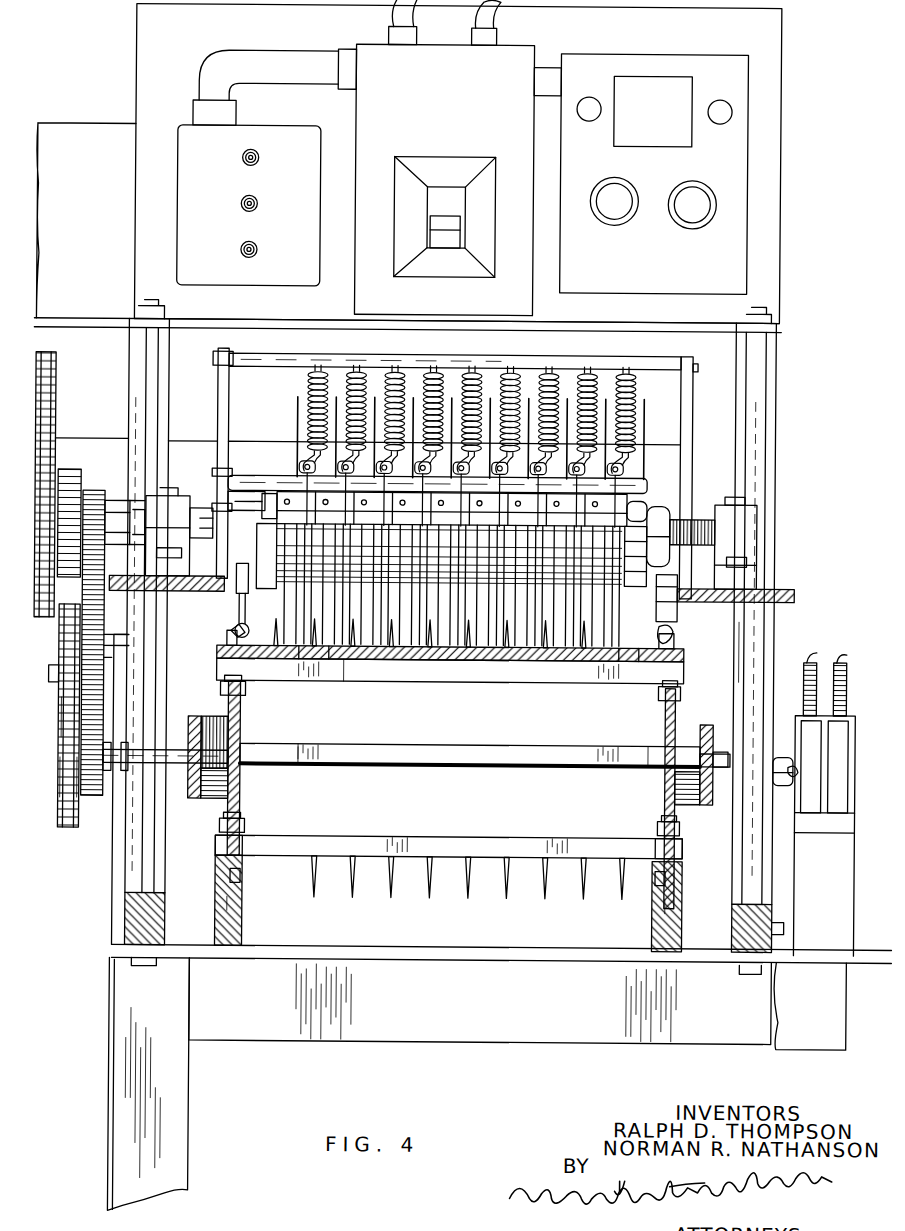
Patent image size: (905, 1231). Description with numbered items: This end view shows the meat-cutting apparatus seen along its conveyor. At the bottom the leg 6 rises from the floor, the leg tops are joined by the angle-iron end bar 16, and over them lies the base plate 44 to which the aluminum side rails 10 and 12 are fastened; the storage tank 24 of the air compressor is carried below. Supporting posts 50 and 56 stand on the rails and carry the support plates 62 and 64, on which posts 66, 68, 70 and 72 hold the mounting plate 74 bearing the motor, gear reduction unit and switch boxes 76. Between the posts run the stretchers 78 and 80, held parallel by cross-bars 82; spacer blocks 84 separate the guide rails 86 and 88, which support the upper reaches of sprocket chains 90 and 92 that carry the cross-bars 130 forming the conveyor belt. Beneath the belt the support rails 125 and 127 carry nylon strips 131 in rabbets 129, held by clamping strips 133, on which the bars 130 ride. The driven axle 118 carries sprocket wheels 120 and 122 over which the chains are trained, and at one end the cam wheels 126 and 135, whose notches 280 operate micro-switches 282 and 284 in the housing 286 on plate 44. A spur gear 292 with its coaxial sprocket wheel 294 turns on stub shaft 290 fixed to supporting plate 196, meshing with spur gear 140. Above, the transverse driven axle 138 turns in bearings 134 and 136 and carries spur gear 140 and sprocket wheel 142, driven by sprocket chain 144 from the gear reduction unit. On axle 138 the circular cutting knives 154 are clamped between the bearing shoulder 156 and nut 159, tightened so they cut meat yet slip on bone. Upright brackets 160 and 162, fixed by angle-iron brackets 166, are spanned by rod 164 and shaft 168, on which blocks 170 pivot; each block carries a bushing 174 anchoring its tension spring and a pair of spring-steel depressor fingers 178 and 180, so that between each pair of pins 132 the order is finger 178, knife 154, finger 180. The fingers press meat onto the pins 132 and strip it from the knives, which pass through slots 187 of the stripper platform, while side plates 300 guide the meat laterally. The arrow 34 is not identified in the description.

The leg 6 is at (125, 1073).
The side rail 10 is at (760, 925).
The side rail 12 is at (137, 928).
The end bar 16 is at (413, 1033).
The storage tank 24 is at (68, 776).
The drive direction 34 is at (78, 842).
The base plate 44 is at (470, 955).
The supporting post 50 is at (760, 640).
The supporting post 56 is at (140, 855).
The support plate 62 is at (782, 592).
The supporting plate 64 is at (195, 594).
The supporting post 66 is at (757, 407).
The supporting post 68 is at (767, 487).
The supporting post 70 is at (143, 372).
The supporting post 72 is at (146, 500).
The mounting plate 74 is at (105, 322).
The switch boxes 76 is at (756, 40).
The stretcher 78 is at (715, 738).
The stretcher 80 is at (200, 785).
The cross-bar 82 is at (552, 758).
The spacer block 84 is at (280, 750).
The guide rail 86 is at (668, 715).
The guide rail 88 is at (243, 735).
The sprocket chain 90 is at (700, 648).
The sprocket chain 92 is at (243, 697).
The driven axle 118 is at (175, 745).
The sprocket wheel 120 is at (235, 790).
The sprocket wheel 122 is at (678, 790).
The support rail 125 is at (240, 937).
The cam wheel 126 is at (810, 660).
The support rail 127 is at (660, 928).
The rabbet 129 is at (243, 905).
The cross-bar 130 is at (490, 672).
The strip 131 is at (235, 878).
The pin 132 is at (405, 660).
The clamping strip 133 is at (290, 837).
The bearing 134 is at (742, 520).
The cam wheel 135 is at (810, 690).
The bearing 136 is at (178, 510).
The driven axle 138 is at (703, 518).
The spur gear 140 is at (112, 490).
The sprocket wheel 142 is at (70, 484).
The sprocket chain 144 is at (57, 441).
The cutting knife 154 is at (297, 410).
The bearing shoulder 156 is at (245, 562).
The nut 159 is at (667, 557).
The upright bracket 160 is at (684, 418).
The upright bracket 162 is at (217, 418).
The rod 164 is at (292, 372).
The angle-iron bracket 166 is at (213, 598).
The shaft 168 is at (236, 505).
The block 170 is at (610, 503).
The bushing 174 is at (300, 455).
The depressor finger 178 is at (312, 661).
The depressor finger 180 is at (440, 662).
The slot 187 is at (345, 662).
The supporting plate 196 is at (122, 840).
The notch 280 is at (806, 812).
The micro-switch 282 is at (842, 690).
The micro-switch 284 is at (800, 806).
The housing 286 is at (840, 857).
The stub shaft 290 is at (58, 675).
The spur gear 292 is at (108, 650).
The sprocket wheel 294 is at (67, 715).
The side plate 300 is at (225, 665).